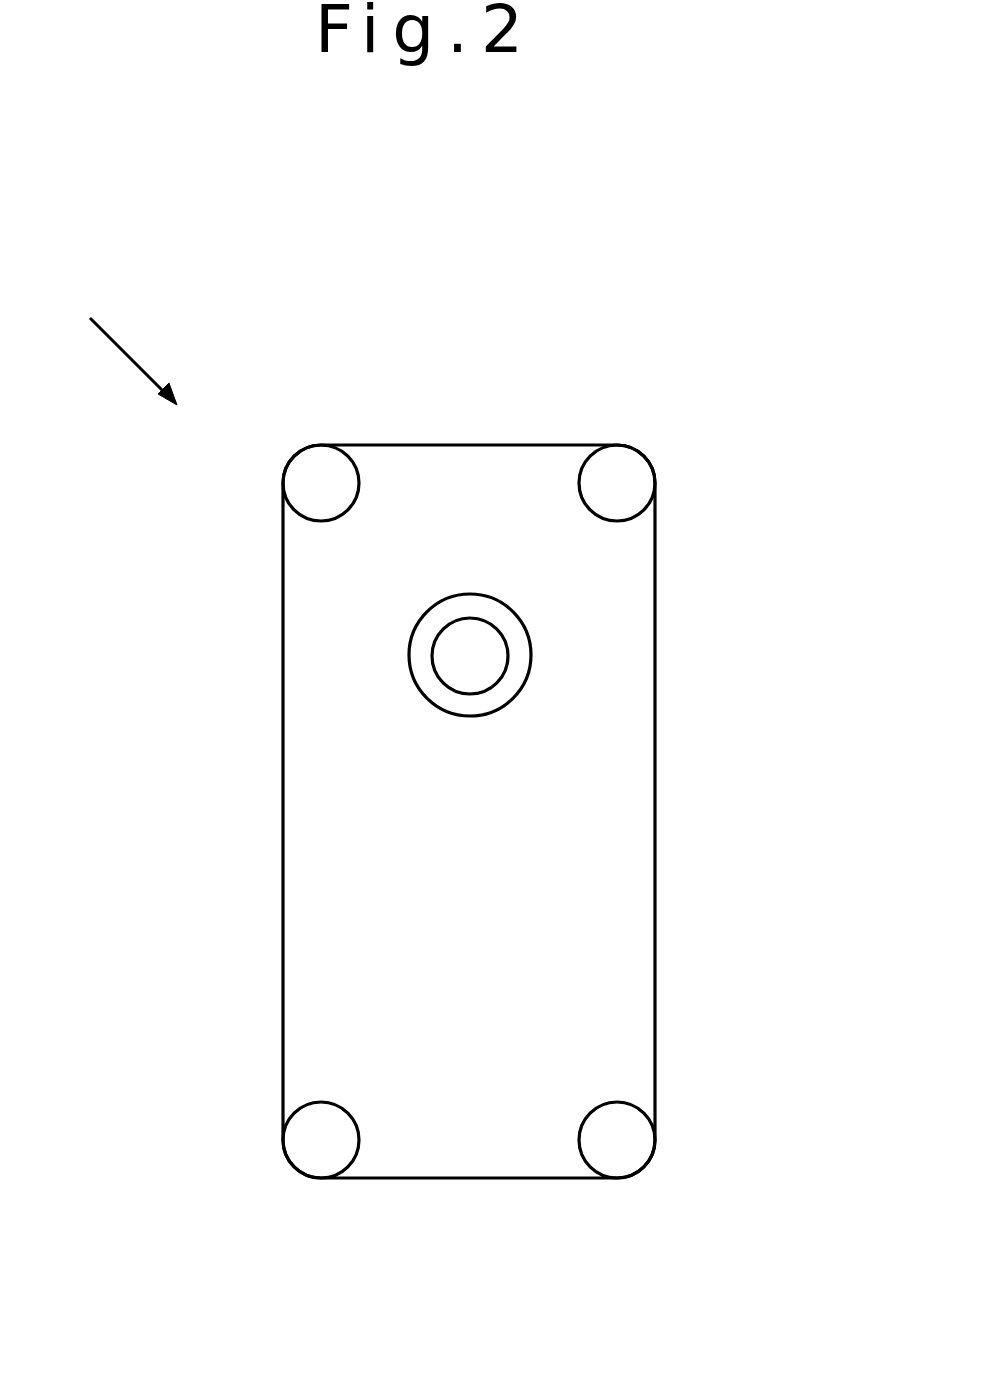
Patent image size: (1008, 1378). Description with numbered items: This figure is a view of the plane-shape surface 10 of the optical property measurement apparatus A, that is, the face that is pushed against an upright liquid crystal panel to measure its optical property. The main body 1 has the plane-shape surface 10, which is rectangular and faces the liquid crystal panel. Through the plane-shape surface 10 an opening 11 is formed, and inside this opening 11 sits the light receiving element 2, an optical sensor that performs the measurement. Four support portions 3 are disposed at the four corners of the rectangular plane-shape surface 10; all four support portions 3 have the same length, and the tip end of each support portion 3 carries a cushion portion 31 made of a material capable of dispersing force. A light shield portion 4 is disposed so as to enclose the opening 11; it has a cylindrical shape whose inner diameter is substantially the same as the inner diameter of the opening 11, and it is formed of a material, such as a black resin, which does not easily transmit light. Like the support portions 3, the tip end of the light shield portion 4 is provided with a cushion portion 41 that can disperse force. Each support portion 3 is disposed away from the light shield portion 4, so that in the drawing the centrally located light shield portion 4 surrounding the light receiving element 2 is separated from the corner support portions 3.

The optical property measurement apparatus A is at (112, 334).
The main body 1 is at (495, 811).
The plane-shape surface 10 is at (615, 973).
The light receiving element 2 is at (313, 705).
The opening 11 is at (433, 668).
The support portion 3 is at (465, 811).
The cushion portion 31 is at (302, 484).
The light shield portion 4 is at (628, 655).
The cushion portion 41 is at (520, 665).